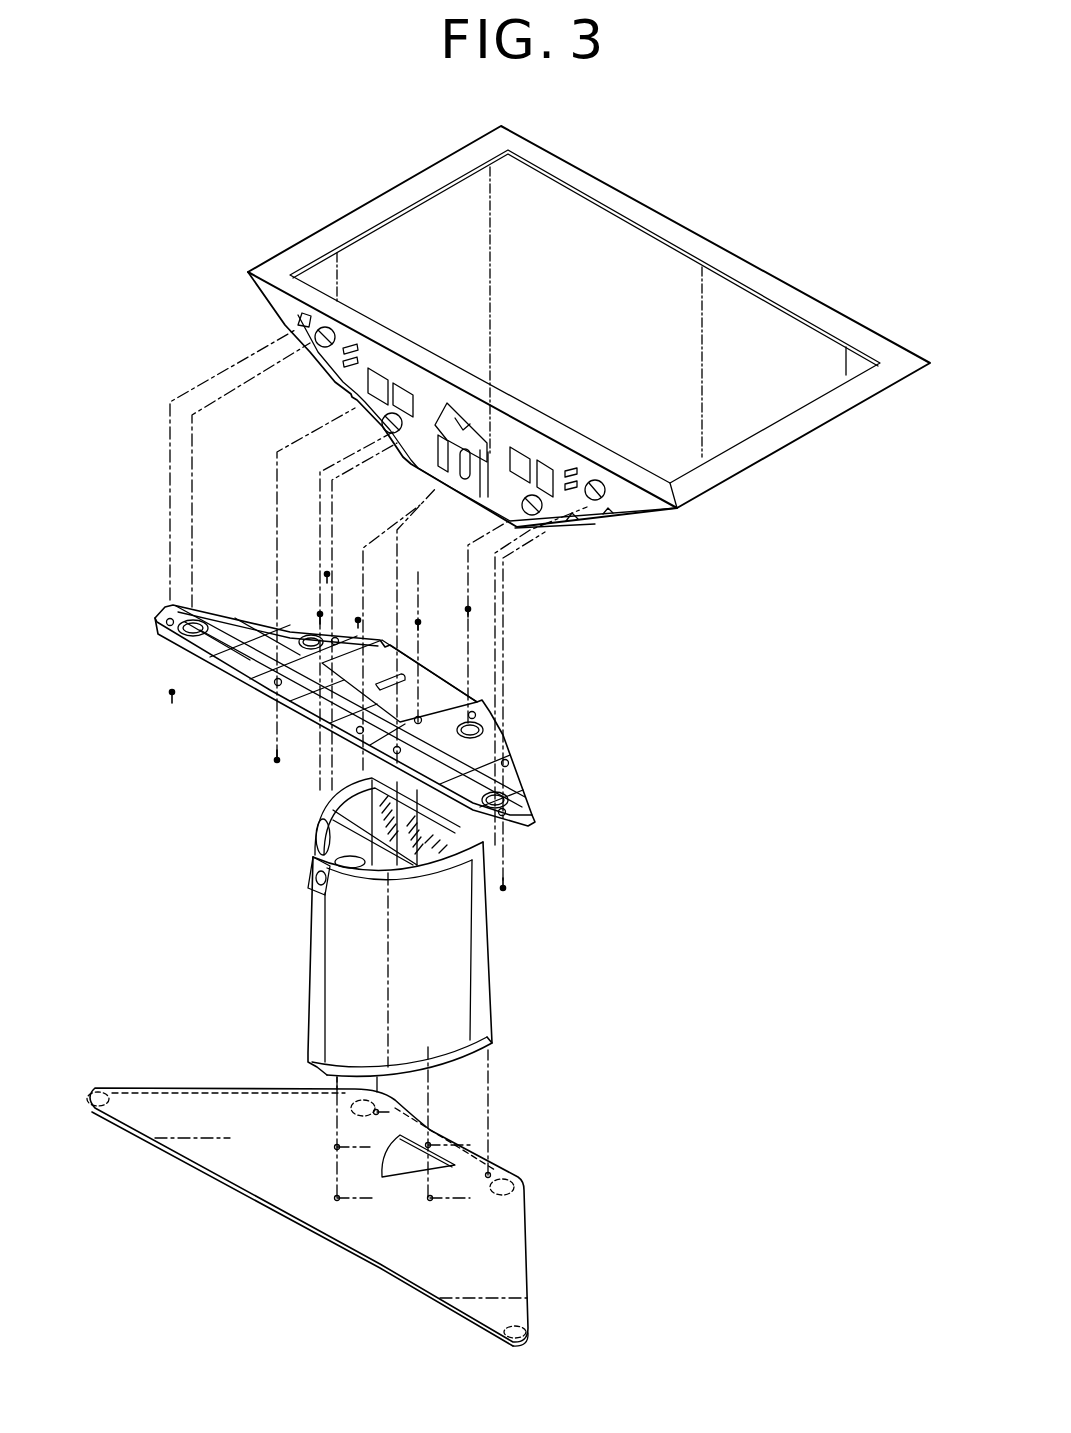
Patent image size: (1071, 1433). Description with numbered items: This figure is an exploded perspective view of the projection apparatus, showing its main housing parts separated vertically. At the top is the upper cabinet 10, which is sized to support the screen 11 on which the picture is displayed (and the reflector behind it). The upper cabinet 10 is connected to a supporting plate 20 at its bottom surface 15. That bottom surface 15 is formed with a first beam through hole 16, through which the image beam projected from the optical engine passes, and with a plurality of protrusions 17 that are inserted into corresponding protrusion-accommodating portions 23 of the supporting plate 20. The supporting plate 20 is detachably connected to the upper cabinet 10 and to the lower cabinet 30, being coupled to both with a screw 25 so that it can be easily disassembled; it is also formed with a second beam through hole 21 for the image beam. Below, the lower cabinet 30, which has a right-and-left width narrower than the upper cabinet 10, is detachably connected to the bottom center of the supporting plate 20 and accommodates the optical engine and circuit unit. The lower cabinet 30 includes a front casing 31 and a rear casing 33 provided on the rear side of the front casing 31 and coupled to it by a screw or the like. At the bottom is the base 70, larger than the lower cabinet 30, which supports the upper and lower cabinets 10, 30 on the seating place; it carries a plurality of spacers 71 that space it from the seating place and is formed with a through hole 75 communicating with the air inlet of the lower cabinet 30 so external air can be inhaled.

The upper cabinet 10 is at (825, 423).
The screen 11 is at (737, 430).
The bottom surface 15 is at (600, 502).
The first beam through hole 16 is at (452, 438).
The protrusions 17 is at (573, 516).
The supporting plate 20 is at (342, 710).
The second beam through hole 21 is at (340, 708).
The protrusion-accommodating portions 23 is at (507, 772).
The screw 25 is at (327, 580).
The lower cabinet 30 is at (483, 935).
The front casing 31 is at (603, 888).
The rear casing 33 is at (480, 838).
The base 70 is at (348, 1217).
The spacers 71 is at (523, 1185).
The through hole 75 is at (447, 1158).